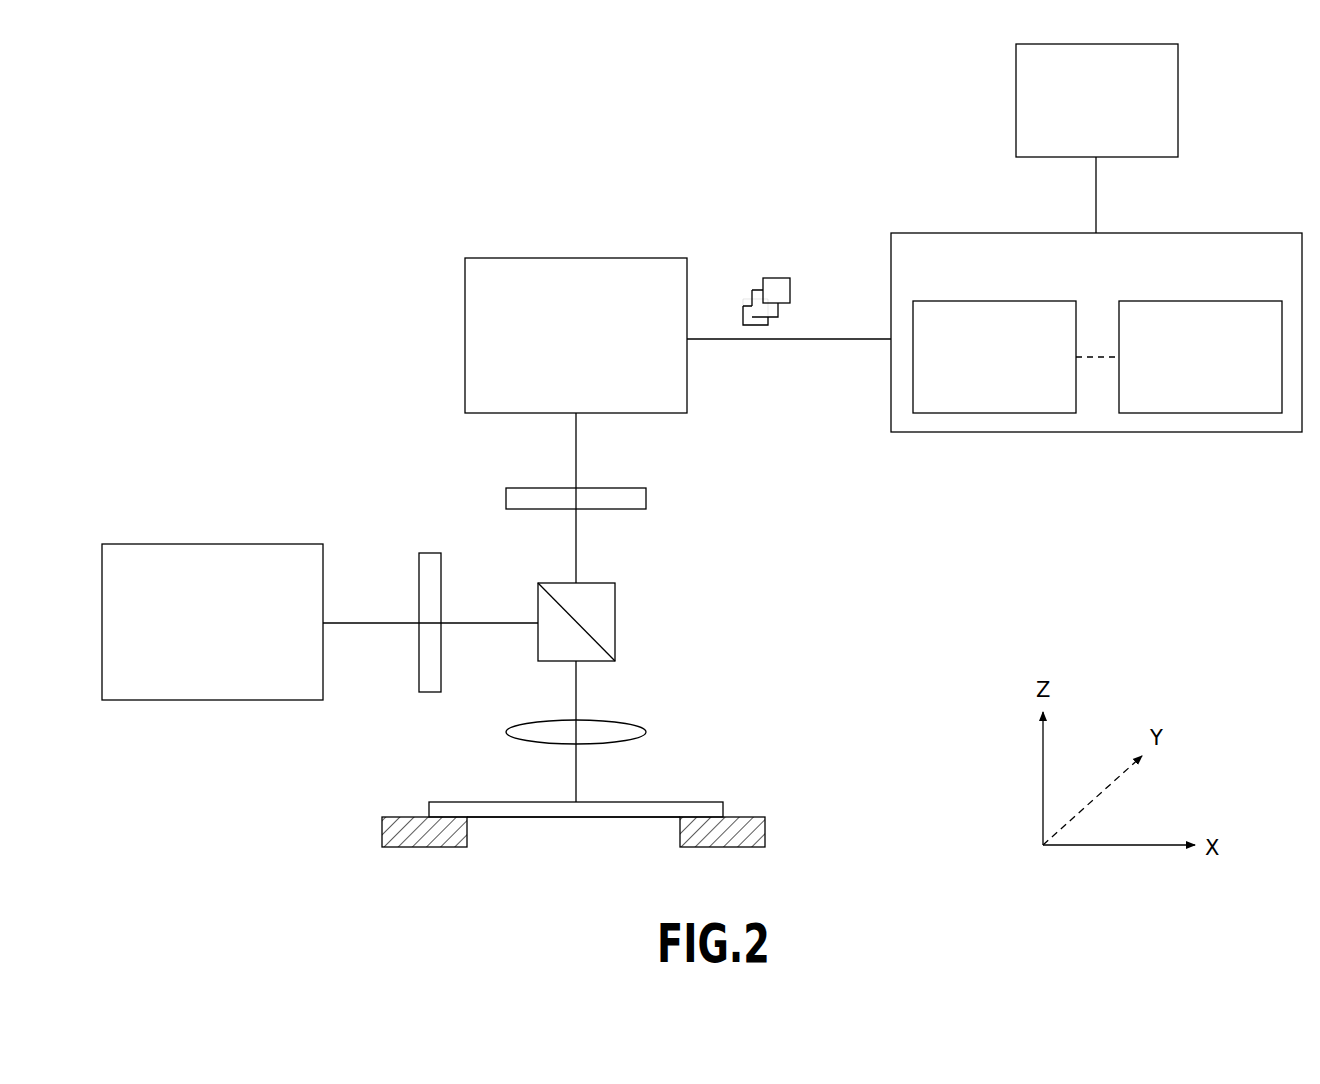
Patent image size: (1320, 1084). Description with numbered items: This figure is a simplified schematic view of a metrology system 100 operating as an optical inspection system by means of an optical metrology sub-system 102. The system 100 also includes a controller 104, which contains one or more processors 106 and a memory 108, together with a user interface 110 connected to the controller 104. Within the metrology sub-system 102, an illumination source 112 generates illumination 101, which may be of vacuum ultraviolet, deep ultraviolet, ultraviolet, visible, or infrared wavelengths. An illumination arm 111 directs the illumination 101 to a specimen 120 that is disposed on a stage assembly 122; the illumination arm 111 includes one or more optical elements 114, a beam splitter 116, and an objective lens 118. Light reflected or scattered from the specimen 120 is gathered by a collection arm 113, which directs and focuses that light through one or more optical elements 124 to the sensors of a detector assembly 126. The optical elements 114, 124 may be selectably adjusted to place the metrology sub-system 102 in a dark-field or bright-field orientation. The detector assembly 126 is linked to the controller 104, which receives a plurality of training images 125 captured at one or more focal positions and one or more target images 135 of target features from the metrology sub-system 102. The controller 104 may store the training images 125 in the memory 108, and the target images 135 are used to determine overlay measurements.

The system 100 is at (308, 183).
The illumination 101 is at (375, 623).
The metrology sub-system 102 is at (251, 358).
The controller 104 is at (1096, 332).
The processors 106 is at (994, 357).
The memory 108 is at (1200, 357).
The user interface 110 is at (1097, 100).
The illumination arm 111 is at (368, 521).
The illumination source 112 is at (212, 622).
The collection arm 113 is at (734, 651).
The optical elements 114 is at (430, 692).
The beam splitter 116 is at (615, 620).
The objective lens 118 is at (630, 722).
The specimen 120 is at (687, 802).
The stage assembly 122 is at (765, 826).
The optical elements 124 is at (646, 497).
The training images 125 is at (726, 285).
The detector assembly 126 is at (576, 335).
The target images 135 is at (814, 285).